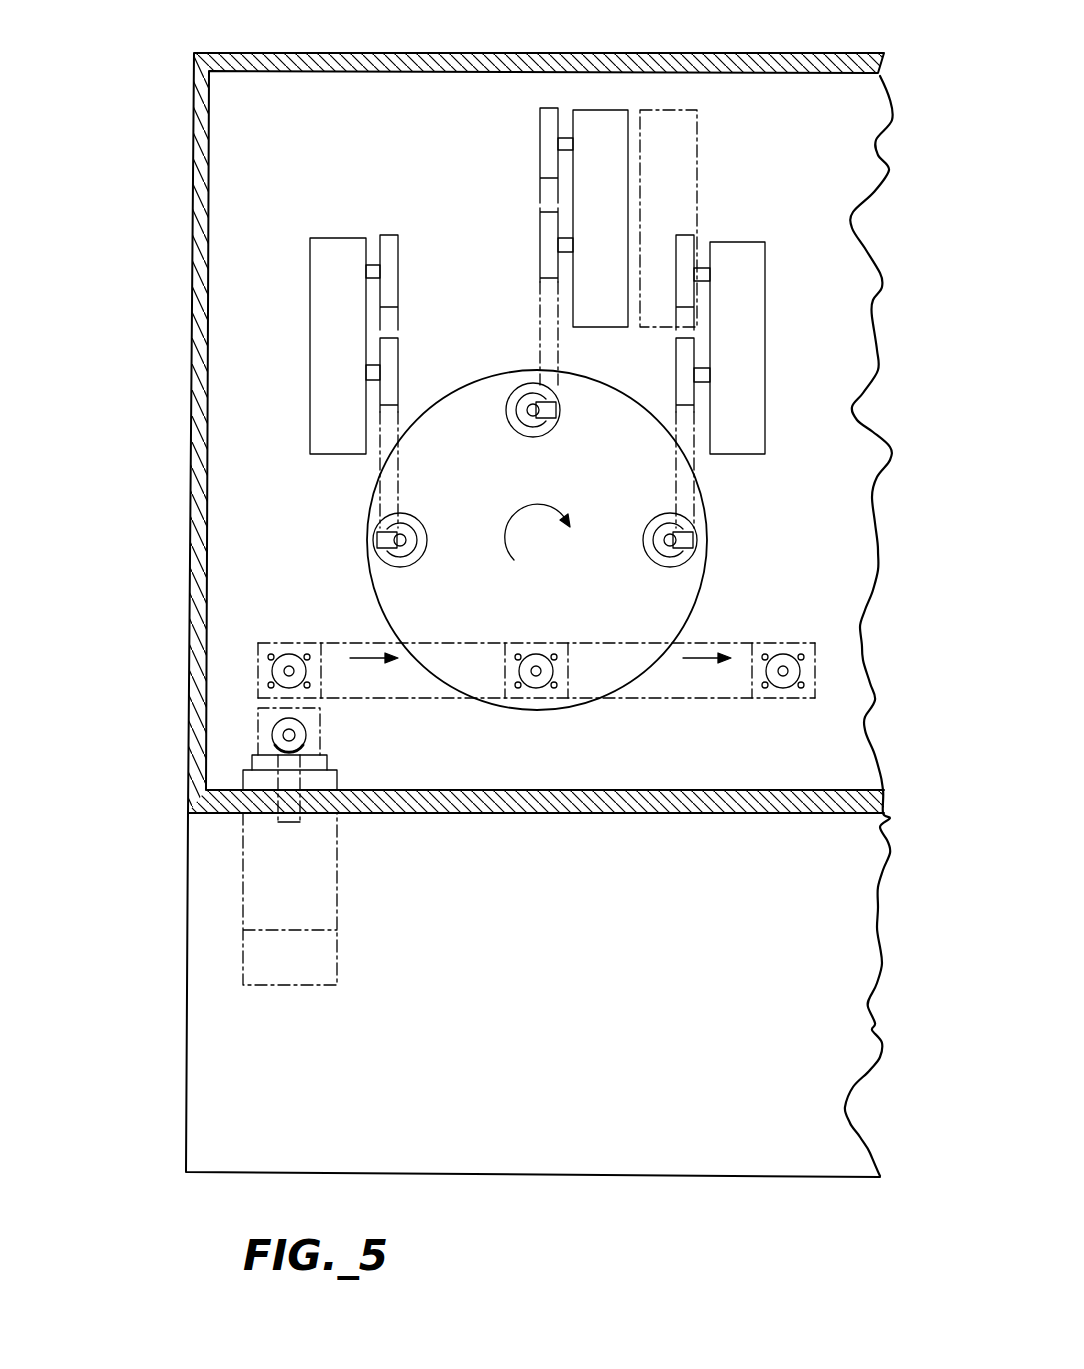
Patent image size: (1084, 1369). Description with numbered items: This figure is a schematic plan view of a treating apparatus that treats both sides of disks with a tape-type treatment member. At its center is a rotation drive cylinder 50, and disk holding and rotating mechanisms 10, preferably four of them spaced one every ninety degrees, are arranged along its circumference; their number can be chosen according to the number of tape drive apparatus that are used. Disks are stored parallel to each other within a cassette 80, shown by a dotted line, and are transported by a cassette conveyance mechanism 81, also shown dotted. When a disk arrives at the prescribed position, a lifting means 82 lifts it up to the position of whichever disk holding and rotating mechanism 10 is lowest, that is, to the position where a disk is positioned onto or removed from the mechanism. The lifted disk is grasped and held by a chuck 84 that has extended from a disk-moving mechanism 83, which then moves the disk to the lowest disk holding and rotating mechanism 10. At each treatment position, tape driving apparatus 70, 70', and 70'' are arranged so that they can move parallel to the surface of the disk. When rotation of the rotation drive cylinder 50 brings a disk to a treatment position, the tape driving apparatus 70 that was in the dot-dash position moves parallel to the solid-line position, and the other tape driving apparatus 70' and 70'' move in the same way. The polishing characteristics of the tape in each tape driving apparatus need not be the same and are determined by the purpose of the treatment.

The disk holding and rotating mechanism 10 is at (398, 558).
The rotation drive cylinder 50 is at (712, 602).
The tape driving apparatus 70 is at (618, 200).
The tape driving apparatus 70' is at (369, 353).
The tape driving apparatus 70'' is at (751, 353).
The cassette 80 is at (262, 720).
The cassette conveyance mechanism 81 is at (275, 842).
The lifting means 82 is at (272, 782).
The disk-moving mechanism 83 is at (283, 640).
The chuck 84 is at (262, 682).